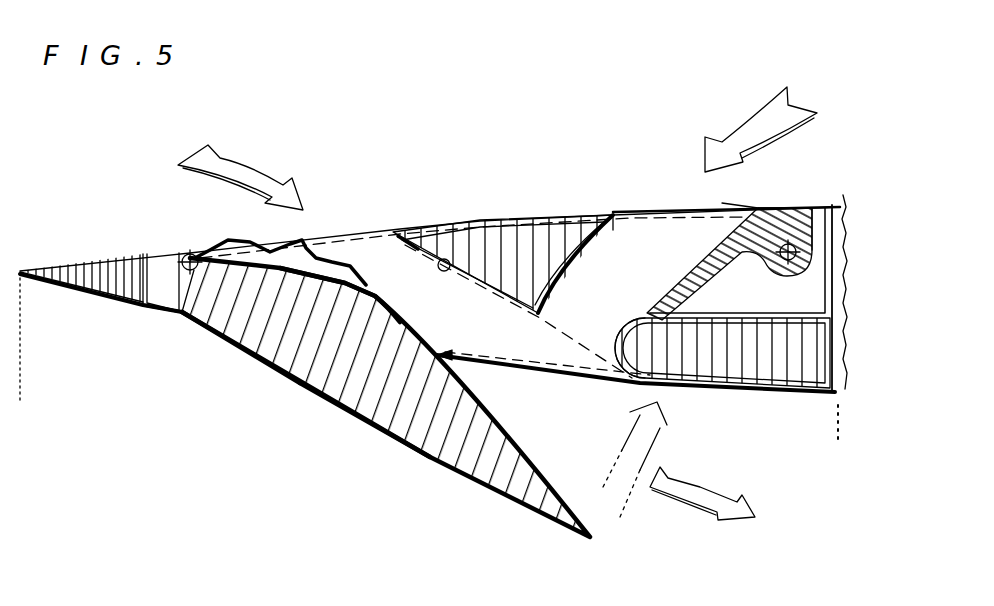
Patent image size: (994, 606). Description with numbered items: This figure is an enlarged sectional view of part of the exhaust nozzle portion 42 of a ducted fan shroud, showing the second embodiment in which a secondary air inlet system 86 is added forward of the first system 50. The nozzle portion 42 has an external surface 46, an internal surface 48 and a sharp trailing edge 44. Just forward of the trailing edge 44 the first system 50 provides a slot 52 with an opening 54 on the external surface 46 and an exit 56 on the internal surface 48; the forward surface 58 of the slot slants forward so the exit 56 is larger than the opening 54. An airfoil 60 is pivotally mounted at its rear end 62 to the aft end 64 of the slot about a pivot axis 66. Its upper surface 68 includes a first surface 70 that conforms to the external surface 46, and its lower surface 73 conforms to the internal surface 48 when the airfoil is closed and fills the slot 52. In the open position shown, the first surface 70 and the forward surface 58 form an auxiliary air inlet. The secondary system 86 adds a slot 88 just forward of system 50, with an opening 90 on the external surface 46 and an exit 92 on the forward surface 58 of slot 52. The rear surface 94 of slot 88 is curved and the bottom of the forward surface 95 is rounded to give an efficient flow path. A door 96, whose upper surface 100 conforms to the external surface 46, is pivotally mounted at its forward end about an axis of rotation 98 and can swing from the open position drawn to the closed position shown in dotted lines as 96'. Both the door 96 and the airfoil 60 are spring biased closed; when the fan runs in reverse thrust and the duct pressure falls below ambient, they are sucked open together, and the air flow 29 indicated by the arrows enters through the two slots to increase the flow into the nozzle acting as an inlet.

The airflow 29 is at (265, 172).
The exhaust nozzle portion 42 is at (840, 198).
The trailing edge 44 is at (20, 270).
The external surface 46 is at (515, 228).
The internal surface 48 is at (756, 396).
The system 50 is at (345, 152).
The slot 52 is at (398, 257).
The opening 54 is at (362, 244).
The exit 56 is at (588, 389).
The forward surface 58 is at (445, 262).
The airfoil 60 is at (468, 494).
The rear end 62 is at (225, 335).
The aft end 64 is at (193, 254).
The pivot axis 66 is at (190, 260).
The upper surface 68 is at (386, 292).
The first surface 70 is at (304, 244).
The lower surface 73 is at (335, 410).
The secondary air inlet system 86 is at (655, 127).
The slot 88 is at (608, 232).
The opening 90 is at (652, 219).
The exit 92 is at (558, 340).
The rear surface 94 is at (562, 277).
The bottom of the forward surface 95 is at (628, 352).
The door 96 is at (793, 202).
The closed position of door 96' is at (757, 181).
The axis of rotation 98 is at (782, 264).
The upper surface 100 is at (716, 256).